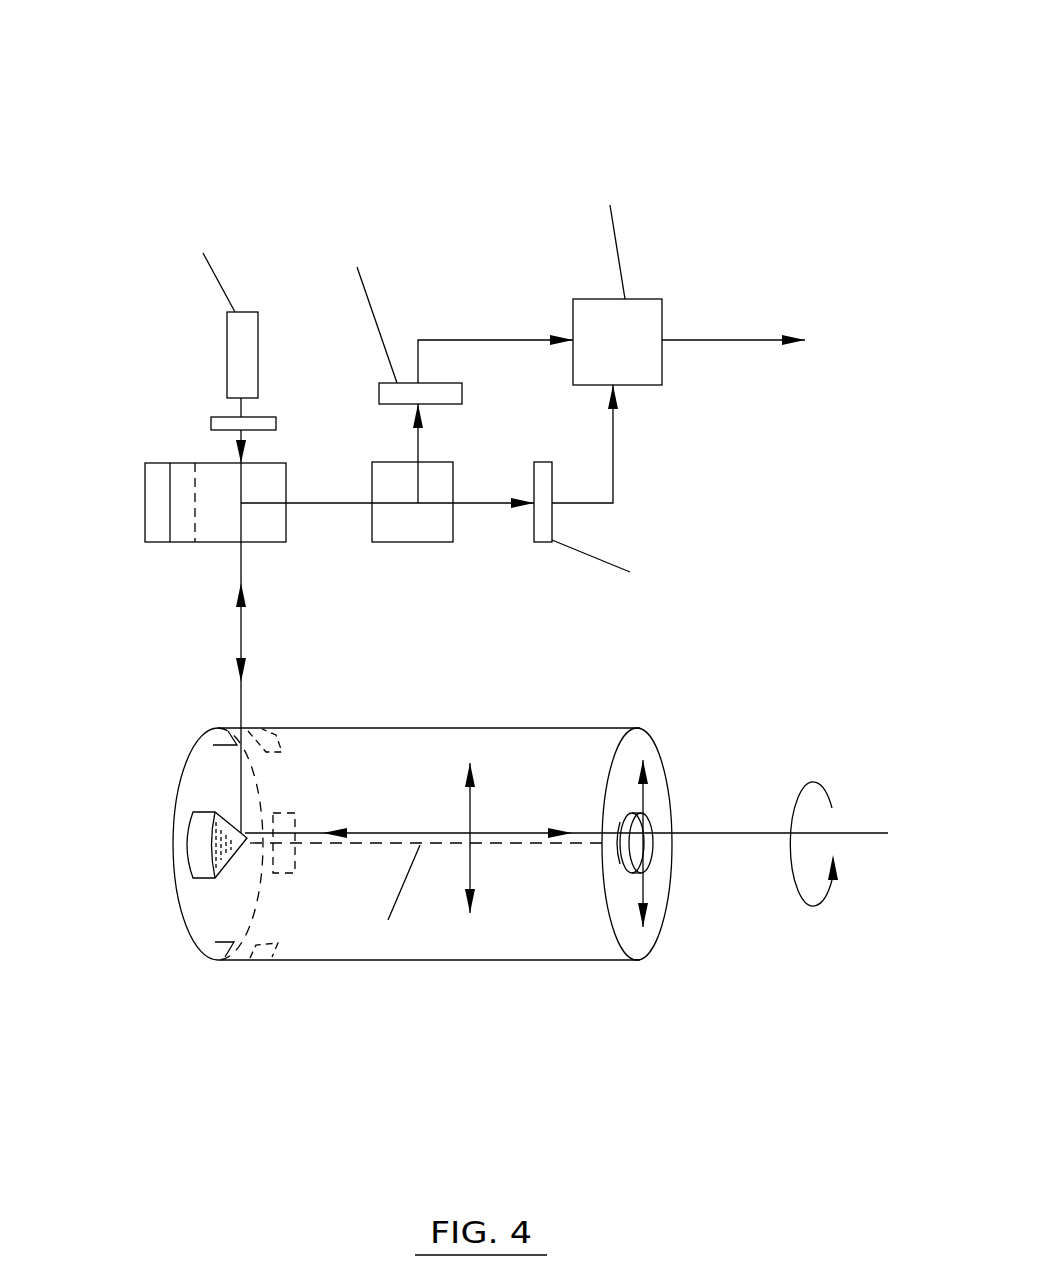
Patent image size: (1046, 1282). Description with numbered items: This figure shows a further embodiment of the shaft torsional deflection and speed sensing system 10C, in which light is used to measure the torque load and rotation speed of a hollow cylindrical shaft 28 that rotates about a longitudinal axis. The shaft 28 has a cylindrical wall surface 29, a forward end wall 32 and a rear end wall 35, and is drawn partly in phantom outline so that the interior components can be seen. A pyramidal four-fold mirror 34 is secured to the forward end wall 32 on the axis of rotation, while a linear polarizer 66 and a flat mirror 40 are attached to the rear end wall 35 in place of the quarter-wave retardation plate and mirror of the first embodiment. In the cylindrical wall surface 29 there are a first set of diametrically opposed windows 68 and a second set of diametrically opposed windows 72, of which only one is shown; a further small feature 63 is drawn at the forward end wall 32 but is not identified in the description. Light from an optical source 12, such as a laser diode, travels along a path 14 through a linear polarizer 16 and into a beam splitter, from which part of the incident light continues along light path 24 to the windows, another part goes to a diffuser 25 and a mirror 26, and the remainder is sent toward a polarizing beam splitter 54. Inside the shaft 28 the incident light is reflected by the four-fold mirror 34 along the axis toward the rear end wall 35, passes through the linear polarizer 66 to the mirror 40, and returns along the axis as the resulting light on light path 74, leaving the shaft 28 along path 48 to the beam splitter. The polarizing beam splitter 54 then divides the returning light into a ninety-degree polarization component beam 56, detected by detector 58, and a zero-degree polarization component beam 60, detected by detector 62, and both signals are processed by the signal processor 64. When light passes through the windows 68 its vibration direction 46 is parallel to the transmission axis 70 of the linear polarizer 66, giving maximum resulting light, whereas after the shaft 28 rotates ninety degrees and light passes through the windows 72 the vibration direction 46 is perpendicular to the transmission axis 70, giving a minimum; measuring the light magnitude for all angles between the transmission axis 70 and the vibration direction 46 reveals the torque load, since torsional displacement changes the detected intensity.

The shaft torsional deflection and speed sensing system 10C is at (664, 104).
The optical source 12 is at (227, 350).
The light path 14 is at (239, 405).
The linear polarizer 16 is at (211, 425).
The light path 24 is at (242, 672).
The diffuser 25 is at (187, 543).
The mirror 26 is at (157, 543).
The shaft 28 is at (442, 923).
The cylindrical wall surface 29 is at (340, 962).
The forward end wall 32 is at (188, 935).
The four-fold mirror 34 is at (200, 810).
The rear end wall 35 is at (638, 937).
The mirror 40 is at (653, 822).
The vibration direction 46 is at (473, 813).
The light path 48 is at (242, 597).
The polarizing beam splitter 54 is at (420, 542).
The ninety-degree polarization component beam 56 is at (422, 450).
The ninety-degree polarization component detector 58 is at (462, 393).
The zero-degree polarization component beam 60 is at (473, 503).
The zero-degree polarization component detector 62 is at (553, 515).
The notch 63 is at (225, 742).
The signal processor 64 is at (617, 342).
The linear polarizer 66 is at (625, 867).
The first set of diametrically opposed windows 68 is at (223, 953).
The transmission axis 70 is at (645, 797).
The second set of diametrically opposed windows 72 is at (283, 812).
The light path 74 is at (377, 832).